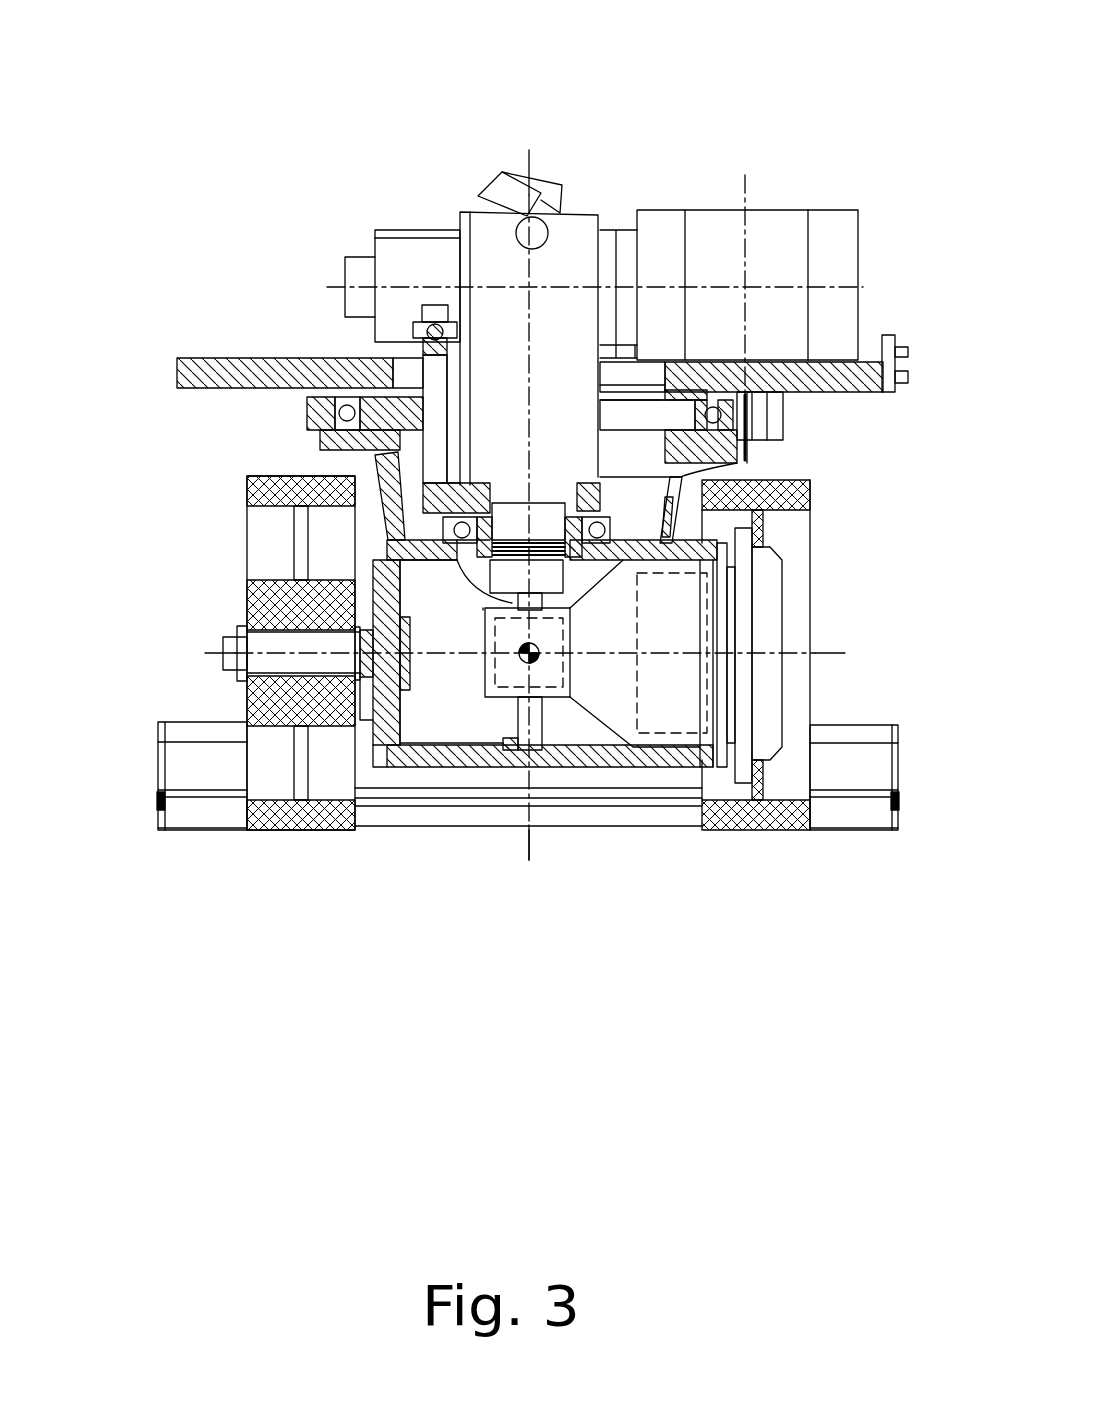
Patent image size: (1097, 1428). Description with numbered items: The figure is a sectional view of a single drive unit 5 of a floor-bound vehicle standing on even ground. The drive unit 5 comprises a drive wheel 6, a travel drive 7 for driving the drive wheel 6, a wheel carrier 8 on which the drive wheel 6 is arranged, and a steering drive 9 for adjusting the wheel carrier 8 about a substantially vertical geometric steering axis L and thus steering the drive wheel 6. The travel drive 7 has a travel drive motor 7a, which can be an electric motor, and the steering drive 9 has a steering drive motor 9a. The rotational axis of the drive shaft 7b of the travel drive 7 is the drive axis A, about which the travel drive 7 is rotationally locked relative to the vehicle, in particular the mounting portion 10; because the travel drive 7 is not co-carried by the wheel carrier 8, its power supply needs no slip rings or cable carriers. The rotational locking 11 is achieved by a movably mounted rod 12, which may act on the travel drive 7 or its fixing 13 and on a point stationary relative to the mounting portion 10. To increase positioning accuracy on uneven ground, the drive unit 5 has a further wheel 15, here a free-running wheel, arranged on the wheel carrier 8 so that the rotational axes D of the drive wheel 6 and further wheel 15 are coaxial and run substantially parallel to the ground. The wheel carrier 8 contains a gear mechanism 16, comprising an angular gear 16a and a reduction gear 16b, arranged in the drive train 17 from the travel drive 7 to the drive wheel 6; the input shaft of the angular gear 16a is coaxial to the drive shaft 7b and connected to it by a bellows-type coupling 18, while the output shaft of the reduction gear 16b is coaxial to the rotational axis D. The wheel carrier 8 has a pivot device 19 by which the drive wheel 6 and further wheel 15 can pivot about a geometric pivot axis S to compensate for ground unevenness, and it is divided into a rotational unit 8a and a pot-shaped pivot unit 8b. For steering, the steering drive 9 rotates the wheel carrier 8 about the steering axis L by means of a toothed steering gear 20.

The drive unit 5 is at (762, 92).
The drive wheel 6 is at (780, 830).
The travel drive 7 is at (579, 180).
The travel drive motor 7a is at (586, 240).
The drive shaft 7b is at (540, 488).
The wheel carrier 8 is at (348, 450).
The rotational unit 8a is at (405, 480).
The pivot unit 8b is at (460, 757).
The steering drive 9 is at (338, 196).
The steering drive motor 9a is at (423, 257).
The mounting portion 10 is at (205, 372).
The rotational locking 11 is at (420, 328).
The rod 12 is at (380, 320).
The fixing 13 is at (428, 372).
The further wheel 15 is at (247, 500).
The gear mechanism 16 is at (632, 780).
The angular gear 16a is at (582, 782).
The reduction gear 16b is at (663, 755).
The drive train 17 is at (413, 757).
The coupling 18 is at (487, 592).
The pivot device 19 is at (480, 680).
The steering gear 20 is at (812, 420).
The drive axis A is at (522, 157).
The rotational axis D is at (793, 650).
The steering axis L is at (527, 838).
The pivot axis S is at (520, 655).